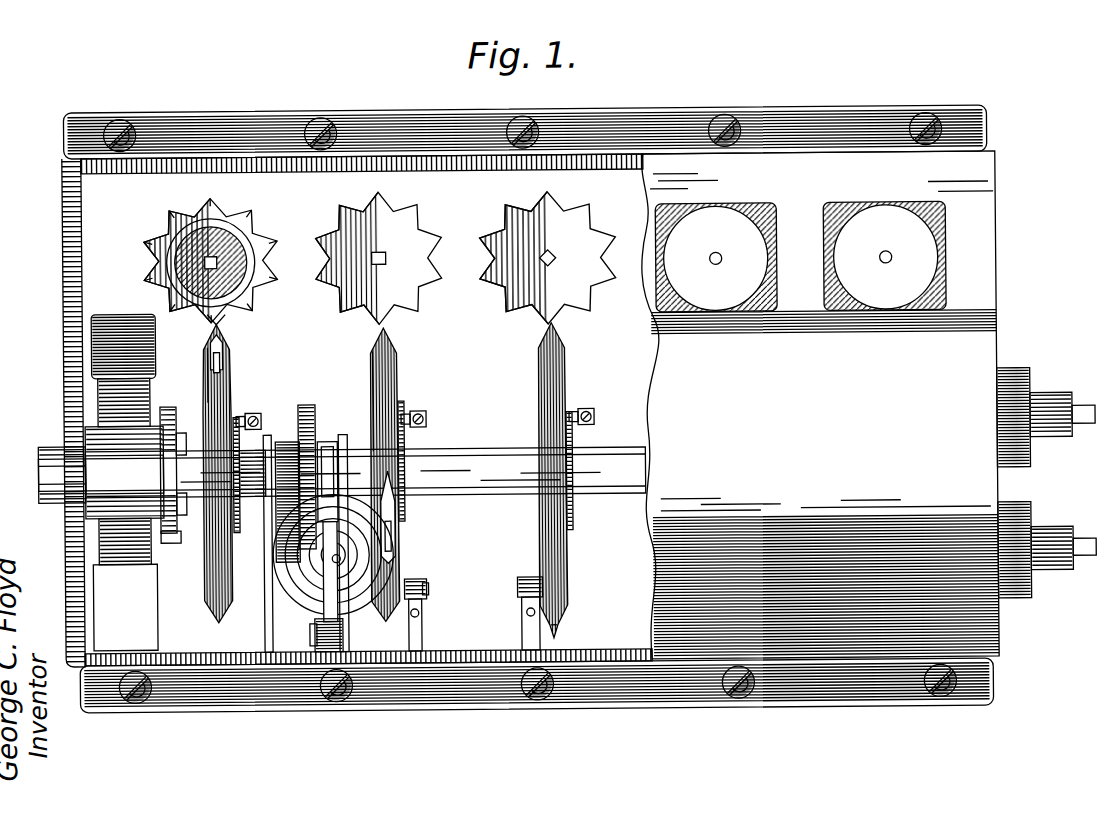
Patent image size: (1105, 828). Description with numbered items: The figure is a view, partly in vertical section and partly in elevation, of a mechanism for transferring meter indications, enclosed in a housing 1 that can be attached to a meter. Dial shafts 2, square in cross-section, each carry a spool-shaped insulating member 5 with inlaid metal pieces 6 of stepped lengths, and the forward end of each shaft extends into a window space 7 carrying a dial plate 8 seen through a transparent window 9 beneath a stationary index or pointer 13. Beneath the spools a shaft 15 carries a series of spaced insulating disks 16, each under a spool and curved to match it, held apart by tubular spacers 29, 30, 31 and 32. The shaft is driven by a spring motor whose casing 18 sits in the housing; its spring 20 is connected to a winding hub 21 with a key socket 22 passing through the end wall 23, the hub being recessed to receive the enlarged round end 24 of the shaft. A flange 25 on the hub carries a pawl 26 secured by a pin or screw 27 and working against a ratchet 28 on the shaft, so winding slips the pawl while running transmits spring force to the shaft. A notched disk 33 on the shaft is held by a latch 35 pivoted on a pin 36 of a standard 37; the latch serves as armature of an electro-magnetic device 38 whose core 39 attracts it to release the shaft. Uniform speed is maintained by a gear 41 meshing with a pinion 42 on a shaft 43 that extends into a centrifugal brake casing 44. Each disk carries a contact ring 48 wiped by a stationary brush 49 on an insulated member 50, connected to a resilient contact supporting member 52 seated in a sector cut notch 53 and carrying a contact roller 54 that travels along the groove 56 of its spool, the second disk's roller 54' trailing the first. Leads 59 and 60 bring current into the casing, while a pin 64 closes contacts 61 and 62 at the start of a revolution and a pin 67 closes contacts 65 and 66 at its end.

The housing 1 is at (820, 405).
The dial shaft 2 is at (373, 262).
The insulating member 5 is at (252, 222).
The metal pieces 6 is at (165, 262).
The window space 7 is at (824, 276).
The dial plate 8 is at (832, 256).
The transparent window 9 is at (828, 212).
The stationary index or pointer 13 is at (885, 207).
The shaft 15 is at (184, 462).
The disks 16 is at (210, 600).
The casing 18 is at (124, 482).
The spring 20 is at (122, 545).
The winding hub 21 is at (73, 436).
The winding or key socket 22 is at (38, 468).
The end wall 23 is at (70, 378).
The enlarged and round end 24 is at (68, 503).
The flange 25 is at (164, 404).
The pawl 26 is at (174, 540).
The pin or screw 27 is at (178, 520).
The ratchet 28 is at (186, 423).
The spacer 29 is at (191, 507).
The spacer 30 is at (248, 494).
The spacer 31 is at (352, 496).
The spacer 32 is at (456, 495).
The disk 33 is at (326, 440).
The latch 35 is at (338, 584).
The pin 36 is at (309, 636).
The standard 37 is at (341, 624).
The electro-magnetic device 38 is at (333, 556).
The core 39 is at (340, 557).
The gear 41 is at (307, 404).
The pinion 42 is at (268, 542).
The shaft 43 is at (345, 500).
The brake casing 44 is at (287, 452).
The contact plate or ring 48 is at (238, 500).
The stationary contact or brush 49 is at (240, 414).
The insulated member 50 is at (258, 412).
The contact supporting member 52 is at (221, 372).
The sector cut notch 53 is at (206, 380).
The contact member or roller 54 is at (238, 351).
The contact roller 54' is at (415, 536).
The groove 56 is at (233, 312).
The lead 59 is at (1080, 428).
The lead 60 is at (1078, 562).
The electrical contact 61 is at (521, 600).
The electrical contact 62 is at (520, 628).
The pin 64 is at (520, 583).
The contact 65 is at (425, 582).
The contact 66 is at (421, 623).
The pin 67 is at (428, 592).